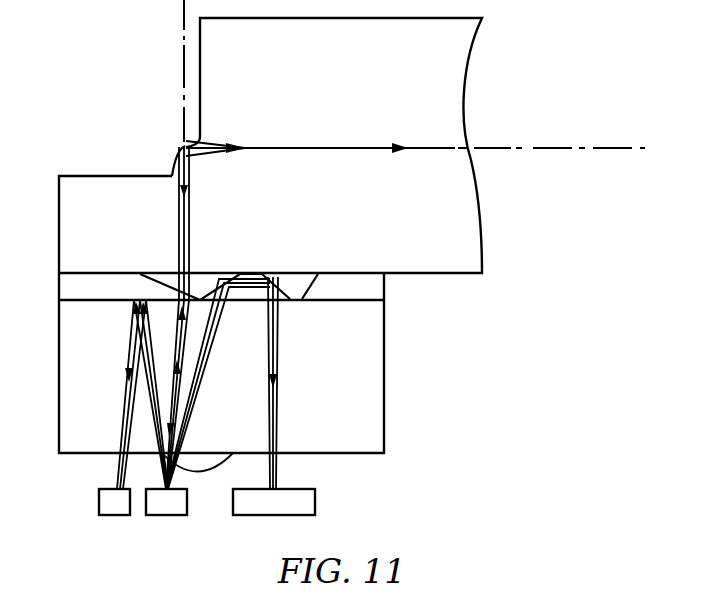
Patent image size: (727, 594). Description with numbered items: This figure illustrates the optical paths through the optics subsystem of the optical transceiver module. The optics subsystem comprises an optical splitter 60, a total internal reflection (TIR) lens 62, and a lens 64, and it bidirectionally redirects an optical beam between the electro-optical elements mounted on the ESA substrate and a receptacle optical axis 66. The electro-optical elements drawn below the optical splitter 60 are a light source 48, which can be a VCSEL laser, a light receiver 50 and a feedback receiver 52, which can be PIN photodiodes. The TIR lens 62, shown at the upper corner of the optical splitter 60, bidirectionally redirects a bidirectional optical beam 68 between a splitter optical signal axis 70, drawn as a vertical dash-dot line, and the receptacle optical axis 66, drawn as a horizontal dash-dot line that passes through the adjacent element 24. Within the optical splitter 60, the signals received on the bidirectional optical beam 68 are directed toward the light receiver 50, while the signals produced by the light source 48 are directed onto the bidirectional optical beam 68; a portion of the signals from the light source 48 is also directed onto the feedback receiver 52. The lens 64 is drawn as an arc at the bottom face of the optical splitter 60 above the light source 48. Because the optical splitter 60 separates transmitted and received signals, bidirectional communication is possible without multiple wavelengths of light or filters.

The measurement object / workpiece 24 is at (484, 253).
The light source 48 is at (167, 515).
The light receiver 50 is at (99, 497).
The feedback receiver 52 is at (315, 500).
The optical splitter 60 is at (385, 375).
The total internal reflection (TIR) lens 62 is at (172, 162).
The lens 64 is at (197, 471).
The receptacle optical axis 66 is at (560, 150).
The bidirectional optical beam 68 is at (190, 207).
The splitter optical signal axis 70 is at (184, 46).